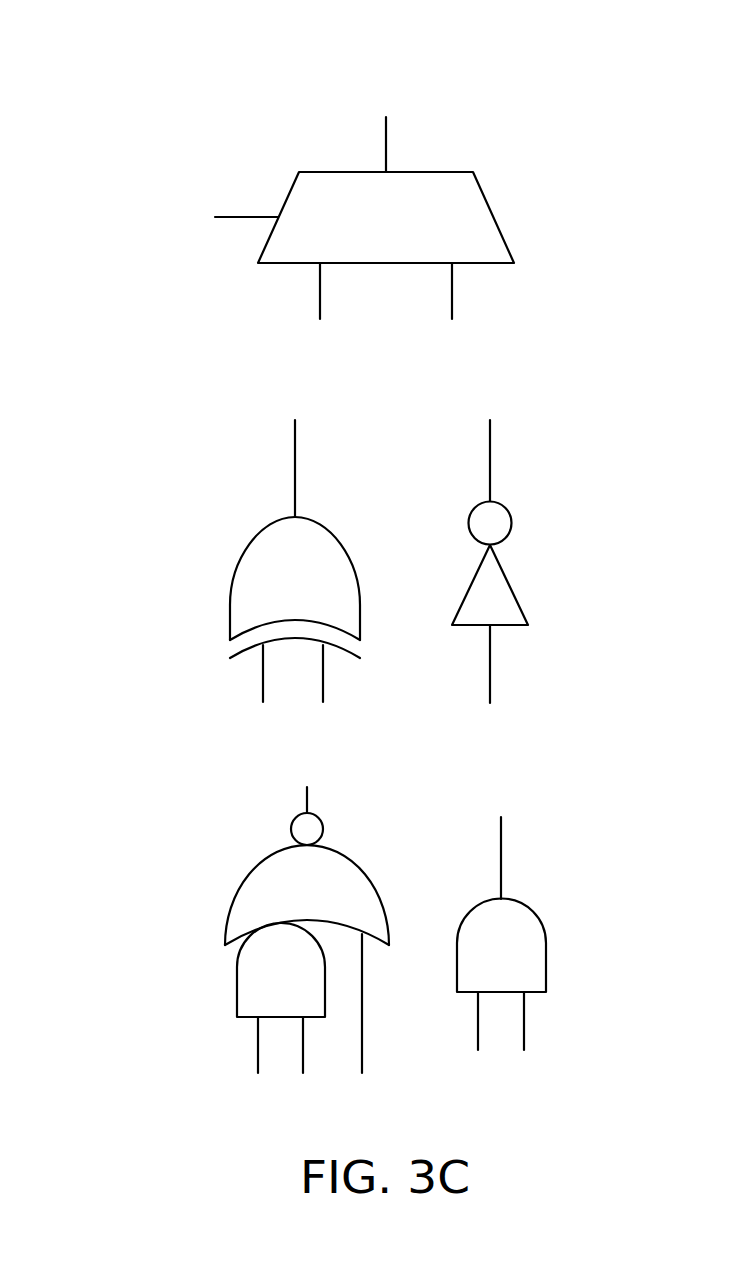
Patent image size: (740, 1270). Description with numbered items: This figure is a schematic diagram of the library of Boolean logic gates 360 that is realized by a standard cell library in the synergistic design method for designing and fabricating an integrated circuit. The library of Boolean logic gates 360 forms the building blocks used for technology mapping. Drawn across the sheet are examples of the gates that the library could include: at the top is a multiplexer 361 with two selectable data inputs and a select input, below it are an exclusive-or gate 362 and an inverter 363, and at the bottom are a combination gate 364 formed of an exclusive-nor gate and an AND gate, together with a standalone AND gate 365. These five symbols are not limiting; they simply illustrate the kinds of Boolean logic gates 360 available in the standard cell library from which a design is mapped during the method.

The Boolean logic gates 360 is at (128, 81).
The multiplexer 361 is at (497, 216).
The exclusive-or gate 362 is at (229, 606).
The inverter 363 is at (511, 580).
The combination gate 364 is at (229, 915).
The AND gate 365 is at (549, 940).